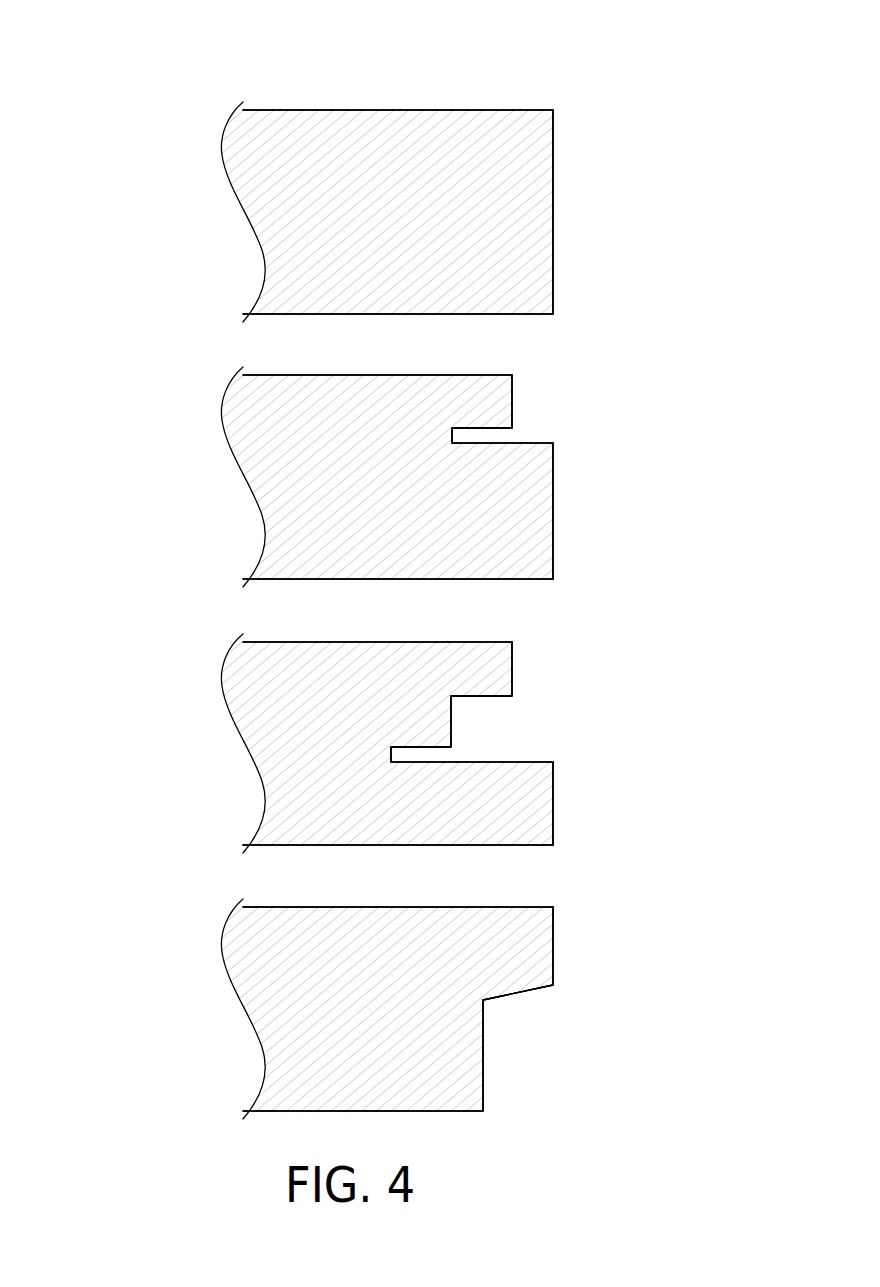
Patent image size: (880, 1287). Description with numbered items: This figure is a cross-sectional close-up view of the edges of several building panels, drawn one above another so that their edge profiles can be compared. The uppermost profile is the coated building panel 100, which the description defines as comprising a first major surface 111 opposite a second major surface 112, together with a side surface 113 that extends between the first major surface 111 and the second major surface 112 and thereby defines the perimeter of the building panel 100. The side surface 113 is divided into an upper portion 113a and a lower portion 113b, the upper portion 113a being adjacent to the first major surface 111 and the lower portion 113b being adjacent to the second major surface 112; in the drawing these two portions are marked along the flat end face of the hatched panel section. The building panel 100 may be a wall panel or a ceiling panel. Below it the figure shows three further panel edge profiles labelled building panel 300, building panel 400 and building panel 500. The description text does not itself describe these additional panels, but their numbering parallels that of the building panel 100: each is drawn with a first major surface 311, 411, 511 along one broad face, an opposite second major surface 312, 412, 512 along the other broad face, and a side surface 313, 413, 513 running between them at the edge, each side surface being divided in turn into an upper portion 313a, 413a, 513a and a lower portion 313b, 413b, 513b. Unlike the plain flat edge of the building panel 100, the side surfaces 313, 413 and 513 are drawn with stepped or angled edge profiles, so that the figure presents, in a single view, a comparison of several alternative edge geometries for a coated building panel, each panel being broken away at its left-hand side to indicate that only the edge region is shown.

The coated building panel 100 is at (196, 150).
The first major surface 111 is at (530, 314).
The second major surface 112 is at (467, 110).
The side surface 113 is at (553, 193).
The upper portion 113a is at (553, 283).
The lower portion 113b is at (553, 137).
The second body with stepped side 300 is at (208, 513).
The bottom surface 311 is at (535, 579).
The top surface 312 is at (495, 375).
The side surface 313 is at (589, 477).
The lower side surface portion 313a is at (553, 520).
The upper stepped side surface portion 313b is at (512, 405).
The third body with double-stepped side 400 is at (198, 784).
The bottom surface 411 is at (298, 845).
The top surface 412 is at (305, 642).
The side surface 413 is at (564, 743).
The lower side surface portion 413a is at (553, 826).
The upper stepped side surface portion 413b is at (451, 718).
The fourth body with chamfered step side 500 is at (225, 1023).
The bottom surface 511 is at (450, 1111).
The top surface 512 is at (540, 907).
The side surface 513 is at (625, 1011).
The lower side surface portion 513a is at (483, 1081).
The upper side surface portion 513b is at (553, 945).